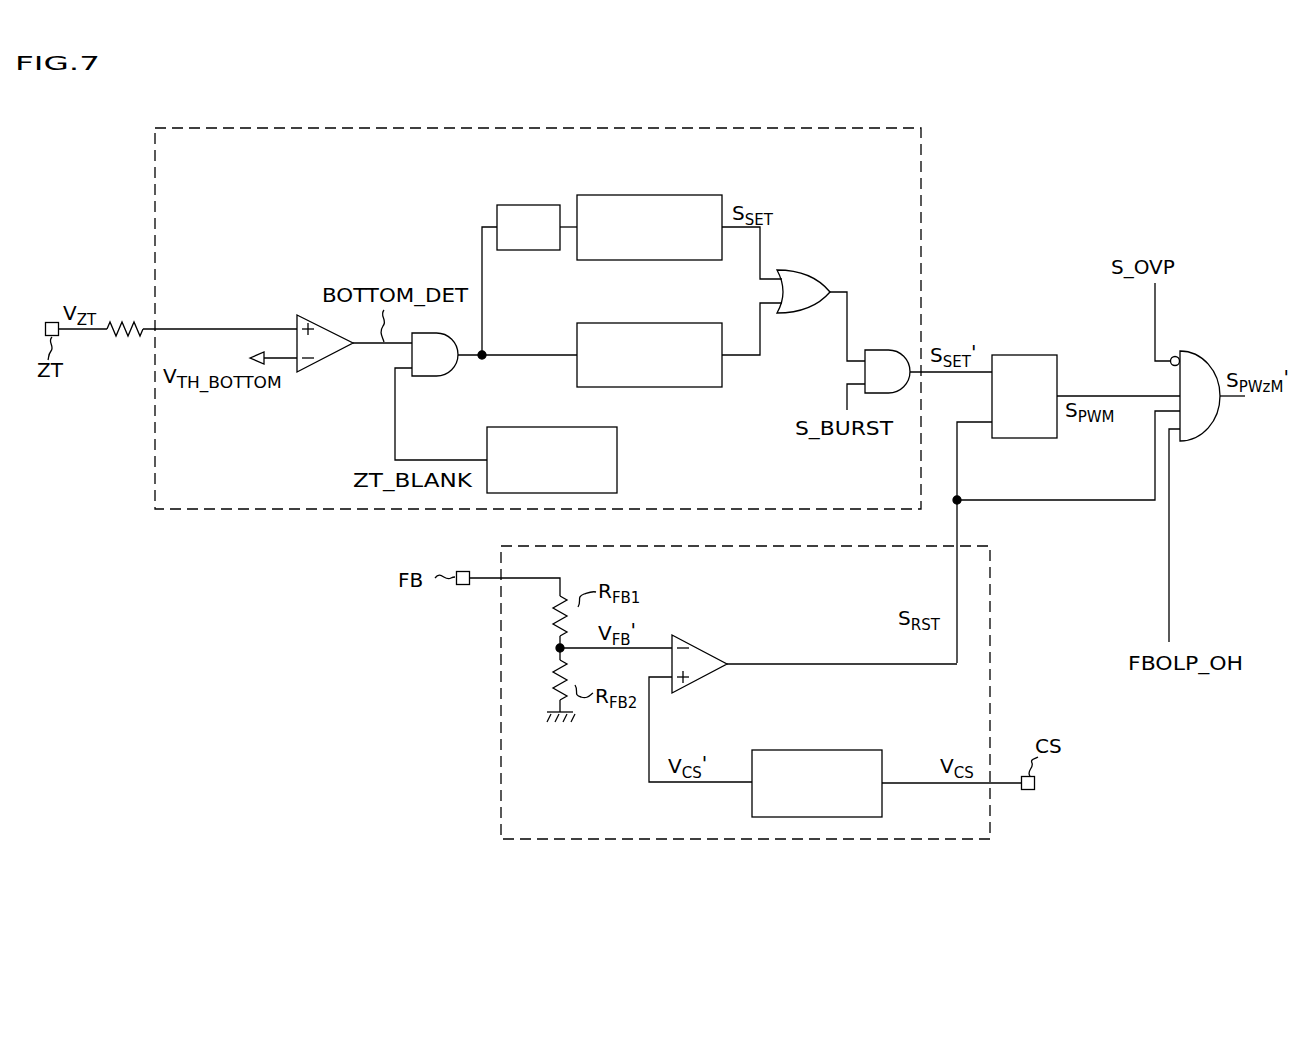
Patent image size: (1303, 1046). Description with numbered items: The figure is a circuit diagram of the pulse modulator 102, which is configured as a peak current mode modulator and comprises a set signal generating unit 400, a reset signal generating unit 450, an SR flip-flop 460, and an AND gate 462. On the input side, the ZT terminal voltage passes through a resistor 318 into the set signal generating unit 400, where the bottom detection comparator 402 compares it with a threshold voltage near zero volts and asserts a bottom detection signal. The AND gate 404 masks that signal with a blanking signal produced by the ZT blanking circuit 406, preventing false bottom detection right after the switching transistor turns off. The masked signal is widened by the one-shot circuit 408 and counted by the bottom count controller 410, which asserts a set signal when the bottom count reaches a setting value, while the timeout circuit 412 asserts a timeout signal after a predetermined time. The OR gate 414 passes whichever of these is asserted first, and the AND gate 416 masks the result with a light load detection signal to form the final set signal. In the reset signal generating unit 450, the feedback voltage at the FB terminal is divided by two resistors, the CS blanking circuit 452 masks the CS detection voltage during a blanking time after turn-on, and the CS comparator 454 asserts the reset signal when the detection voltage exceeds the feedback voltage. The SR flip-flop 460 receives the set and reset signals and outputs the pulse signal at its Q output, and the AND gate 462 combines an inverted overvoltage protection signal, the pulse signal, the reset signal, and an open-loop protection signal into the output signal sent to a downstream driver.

The pulse modulator 102 is at (700, 886).
The resistor 318 is at (125, 320).
The set signal generating unit 400 is at (921, 165).
The bottom detection comparator 402 is at (320, 365).
The AND gate 404 is at (437, 380).
The ZT blanking circuit 406 is at (617, 478).
The one-shot circuit 408 is at (525, 205).
The bottom count controller 410 is at (655, 195).
The timeout circuit 412 is at (645, 323).
The OR gate 414 is at (802, 270).
The AND gate 416 is at (878, 350).
The reset signal generating unit 450 is at (501, 800).
The CS blanking circuit 452 is at (823, 750).
The CS comparator 454 is at (728, 625).
The SR flip-flop 460 is at (1022, 355).
The AND gate 462 is at (1192, 351).